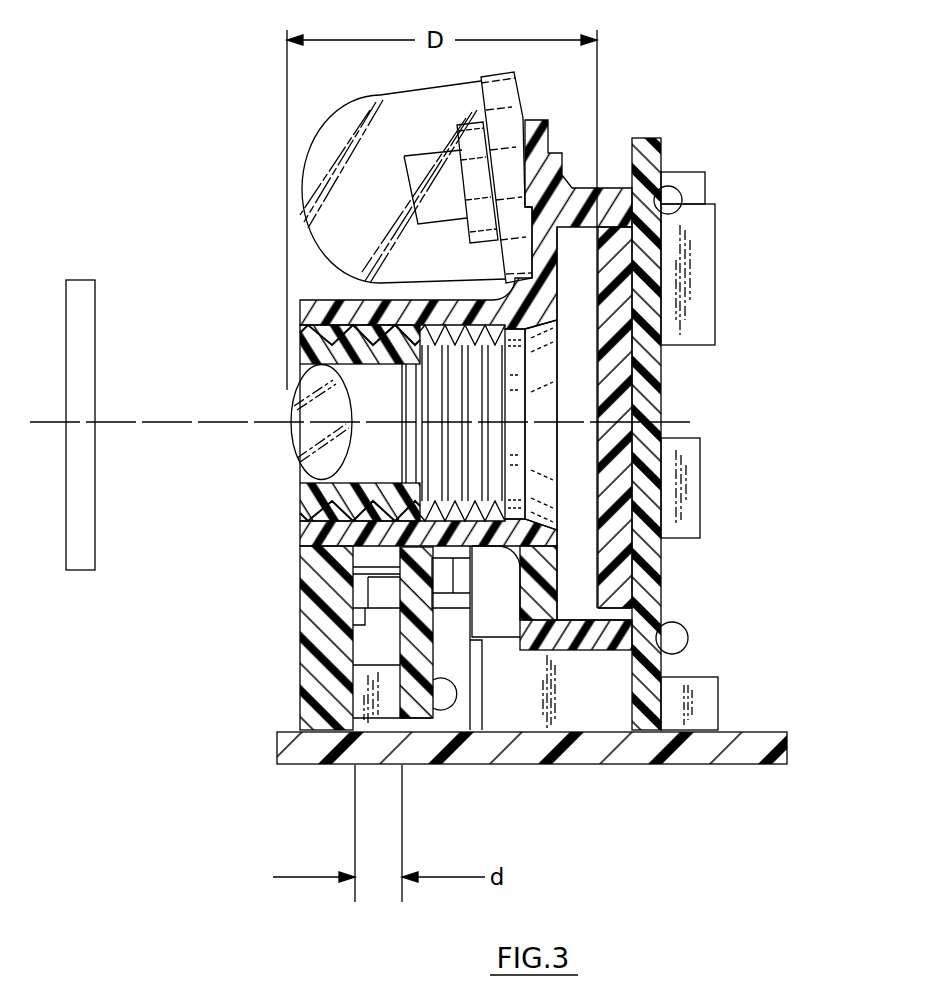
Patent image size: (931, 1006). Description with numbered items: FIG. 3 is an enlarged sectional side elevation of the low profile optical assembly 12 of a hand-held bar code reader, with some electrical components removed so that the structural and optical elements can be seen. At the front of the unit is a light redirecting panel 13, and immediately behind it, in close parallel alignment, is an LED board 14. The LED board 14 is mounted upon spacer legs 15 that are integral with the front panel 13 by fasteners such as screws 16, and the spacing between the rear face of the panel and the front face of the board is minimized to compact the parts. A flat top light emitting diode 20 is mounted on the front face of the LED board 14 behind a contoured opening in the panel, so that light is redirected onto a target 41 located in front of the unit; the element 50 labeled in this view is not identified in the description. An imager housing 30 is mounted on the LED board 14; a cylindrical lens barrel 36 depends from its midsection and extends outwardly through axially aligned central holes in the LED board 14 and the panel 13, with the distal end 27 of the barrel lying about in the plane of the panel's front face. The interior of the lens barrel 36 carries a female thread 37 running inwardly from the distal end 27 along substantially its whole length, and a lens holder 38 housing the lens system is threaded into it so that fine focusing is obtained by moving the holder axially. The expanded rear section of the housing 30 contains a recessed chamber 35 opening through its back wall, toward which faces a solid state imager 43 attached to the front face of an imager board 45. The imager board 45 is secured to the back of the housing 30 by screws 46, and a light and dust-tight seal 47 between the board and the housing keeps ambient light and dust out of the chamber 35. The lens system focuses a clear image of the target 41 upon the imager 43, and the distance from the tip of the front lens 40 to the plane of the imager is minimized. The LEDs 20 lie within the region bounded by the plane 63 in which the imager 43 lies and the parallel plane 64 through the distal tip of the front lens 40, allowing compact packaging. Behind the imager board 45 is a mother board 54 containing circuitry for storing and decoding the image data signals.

The optical assembly 12 is at (735, 396).
The front light redirecting panel 13 is at (276, 681).
The LED board 14 is at (448, 642).
The spacer legs 15 is at (392, 712).
The screws 16 is at (448, 704).
The light emitting diode 20 is at (380, 592).
The distal end of the barrel 27 is at (300, 312).
The imager housing 30 is at (585, 658).
The recessed chamber 35 is at (590, 590).
The lens barrel 36 is at (300, 541).
The female thread 37 is at (445, 303).
The lens holder 38 is at (282, 339).
The front lens 40 is at (300, 455).
The target 41 is at (95, 310).
The solid state imager 43 is at (637, 530).
The imager board 45 is at (662, 373).
The screws 46 is at (670, 198).
The light and dust-tight seal 47 is at (630, 633).
The light emitting diode 50 is at (305, 140).
The mother board 54 is at (728, 765).
The plane 63 is at (597, 62).
The parallel plane 64 is at (287, 167).